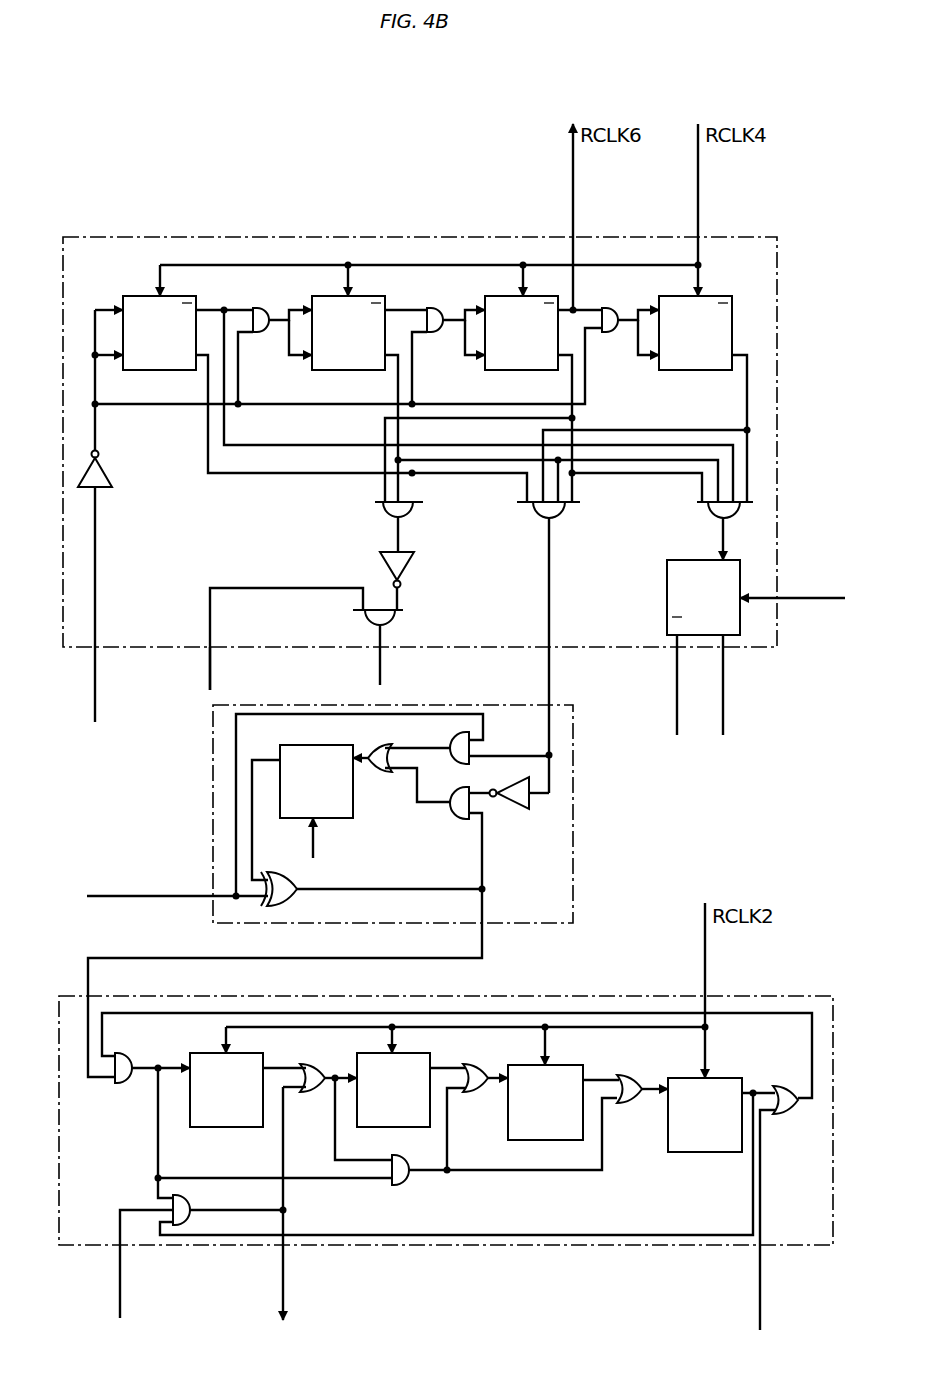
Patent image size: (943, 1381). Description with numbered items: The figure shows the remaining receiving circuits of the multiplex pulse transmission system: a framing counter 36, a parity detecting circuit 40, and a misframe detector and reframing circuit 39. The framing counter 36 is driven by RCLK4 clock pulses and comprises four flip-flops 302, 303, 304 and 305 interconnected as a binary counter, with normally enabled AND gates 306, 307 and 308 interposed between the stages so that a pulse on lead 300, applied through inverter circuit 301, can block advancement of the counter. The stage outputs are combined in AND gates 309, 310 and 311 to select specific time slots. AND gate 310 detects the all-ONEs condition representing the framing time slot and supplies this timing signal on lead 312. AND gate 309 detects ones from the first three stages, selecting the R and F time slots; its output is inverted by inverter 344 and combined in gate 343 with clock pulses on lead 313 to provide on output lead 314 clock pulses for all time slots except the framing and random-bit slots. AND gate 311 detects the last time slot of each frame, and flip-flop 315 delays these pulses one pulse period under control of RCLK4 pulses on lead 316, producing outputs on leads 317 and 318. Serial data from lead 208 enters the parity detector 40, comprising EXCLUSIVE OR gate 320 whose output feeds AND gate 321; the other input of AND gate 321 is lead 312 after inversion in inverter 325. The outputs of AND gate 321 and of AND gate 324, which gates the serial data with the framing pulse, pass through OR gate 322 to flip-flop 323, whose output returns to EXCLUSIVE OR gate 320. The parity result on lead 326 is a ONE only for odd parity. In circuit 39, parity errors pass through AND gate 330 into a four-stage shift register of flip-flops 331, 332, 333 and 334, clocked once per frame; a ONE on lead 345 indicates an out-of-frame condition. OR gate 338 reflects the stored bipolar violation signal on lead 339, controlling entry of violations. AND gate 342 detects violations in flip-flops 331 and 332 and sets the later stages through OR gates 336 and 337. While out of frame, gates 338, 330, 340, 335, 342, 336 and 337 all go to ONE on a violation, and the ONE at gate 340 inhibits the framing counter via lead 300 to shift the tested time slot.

The framing counter 36 is at (303, 242).
The flip-flop 302 is at (150, 294).
The flip-flop 303 is at (340, 361).
The flip-flop 304 is at (522, 361).
The flip-flop 305 is at (697, 372).
The AND gate 306 is at (278, 318).
The AND gate 307 is at (451, 318).
The AND gate 308 is at (624, 318).
The inverter circuit 301 is at (106, 466).
The lead 300 is at (118, 607).
The AND gate 309 is at (414, 527).
The AND gate 310 is at (443, 912).
The AND gate 311 is at (707, 531).
The inverter 344 is at (414, 581).
The gate 343 is at (306, 639).
The lead 313 is at (242, 672).
The output lead 314 is at (413, 664).
The lead 312 is at (572, 675).
The flip-flop 315 is at (666, 582).
The lead 316 is at (815, 626).
The lead 317 is at (677, 694).
The lead 318 is at (442, 979).
The parity detecting circuit 40 is at (214, 796).
The flip-flop 323 is at (326, 760).
The AND gate 324 is at (470, 743).
The OR gate 322 is at (401, 774).
The AND gate 321 is at (288, 932).
The inverter 325 is at (520, 811).
The EXCLUSIVE OR gate 320 is at (373, 898).
The lead 208 is at (177, 875).
The lead 326 is at (485, 952).
The misframe detector and reframing circuit 39 is at (510, 1247).
The AND gate 330 is at (149, 1056).
The flip-flop 331 is at (226, 1118).
The flip-flop 332 is at (400, 1103).
The flip-flop 333 is at (540, 1121).
The flip-flop 334 is at (695, 1159).
The gate 335 is at (339, 1099).
The OR gate 336 is at (474, 1068).
The OR gate 337 is at (632, 1078).
The OR gate 338 is at (775, 1198).
The gate 340 is at (228, 1207).
The AND gate 342 is at (502, 1153).
The lead 345 is at (748, 1089).
The lead 339 is at (802, 1288).